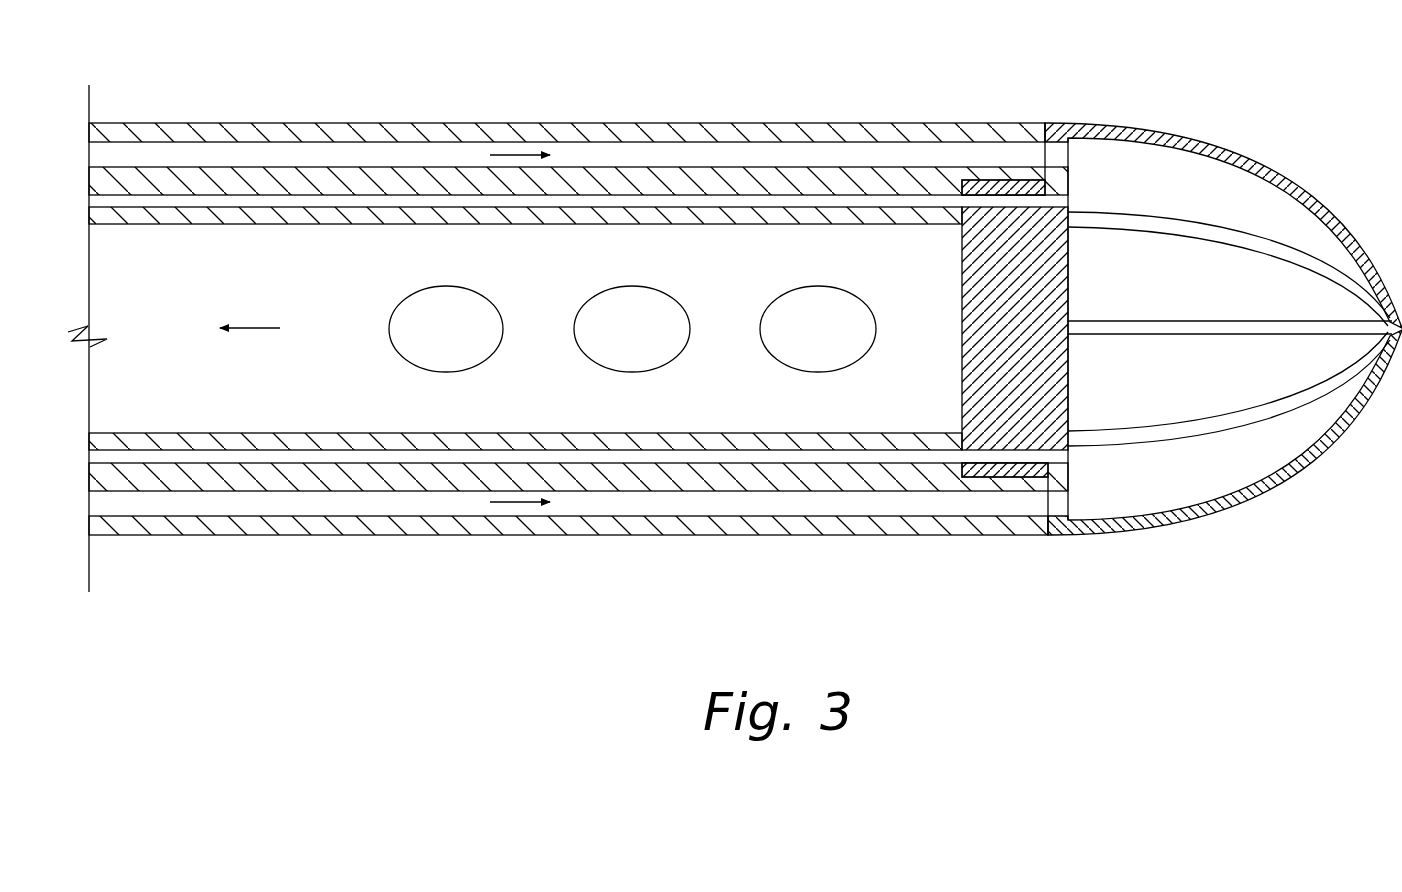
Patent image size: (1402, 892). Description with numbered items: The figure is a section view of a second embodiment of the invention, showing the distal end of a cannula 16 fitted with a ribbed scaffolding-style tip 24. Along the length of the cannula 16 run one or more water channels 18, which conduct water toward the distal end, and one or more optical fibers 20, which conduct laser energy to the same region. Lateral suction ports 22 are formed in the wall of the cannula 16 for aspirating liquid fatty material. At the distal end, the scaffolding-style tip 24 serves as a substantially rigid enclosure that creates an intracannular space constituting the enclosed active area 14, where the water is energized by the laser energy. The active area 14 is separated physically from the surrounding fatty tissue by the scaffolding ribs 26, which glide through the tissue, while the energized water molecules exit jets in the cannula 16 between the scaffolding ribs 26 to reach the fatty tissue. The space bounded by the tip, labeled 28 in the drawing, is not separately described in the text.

The active area 14 is at (1117, 170).
The cannula 16 is at (933, 62).
The water channels 18 is at (248, 153).
The optical fibers 20 is at (352, 200).
The lateral suction ports 22 is at (468, 290).
The scaffolding-style tip 24 is at (1232, 240).
The scaffolding ribs 26 is at (1237, 153).
The tip cavity 28 is at (1192, 183).